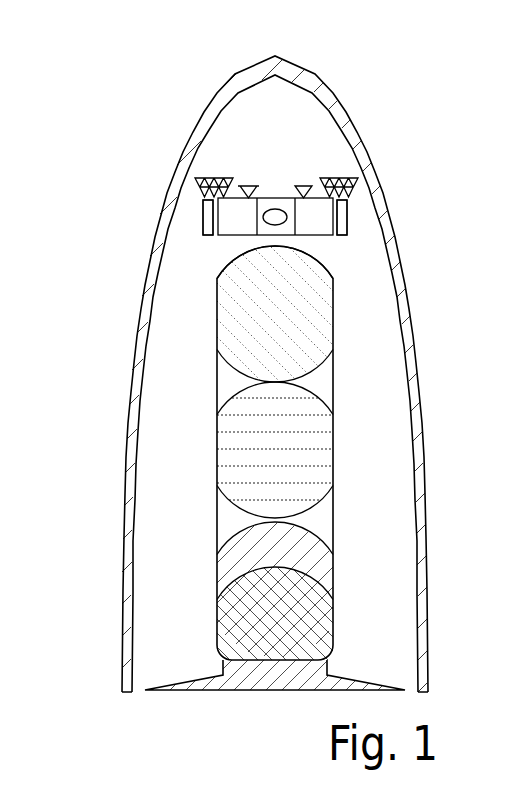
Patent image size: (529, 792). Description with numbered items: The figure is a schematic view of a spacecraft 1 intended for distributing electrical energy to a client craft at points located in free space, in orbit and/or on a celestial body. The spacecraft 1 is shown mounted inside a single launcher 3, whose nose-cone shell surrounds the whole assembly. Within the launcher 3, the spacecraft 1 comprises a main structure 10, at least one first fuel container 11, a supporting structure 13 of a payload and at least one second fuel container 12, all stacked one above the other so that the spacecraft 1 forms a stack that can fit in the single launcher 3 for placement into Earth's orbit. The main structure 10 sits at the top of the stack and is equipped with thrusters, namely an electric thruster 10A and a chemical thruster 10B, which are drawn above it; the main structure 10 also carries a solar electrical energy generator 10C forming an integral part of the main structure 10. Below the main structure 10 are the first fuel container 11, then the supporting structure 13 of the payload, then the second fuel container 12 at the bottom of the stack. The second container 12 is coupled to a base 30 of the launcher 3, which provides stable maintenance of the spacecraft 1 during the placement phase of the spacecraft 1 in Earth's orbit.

The spacecraft 1 is at (288, 130).
The launcher 3 is at (110, 363).
The main structure 10 is at (274, 168).
The electric thruster 10A is at (251, 183).
The chemical thruster 10B is at (209, 179).
The solar electrical energy generator 10C is at (203, 216).
The first fuel container 11 is at (352, 310).
The supporting structure of a payload 13 is at (333, 432).
The second fuel container 12 is at (333, 617).
The base 30 is at (262, 678).